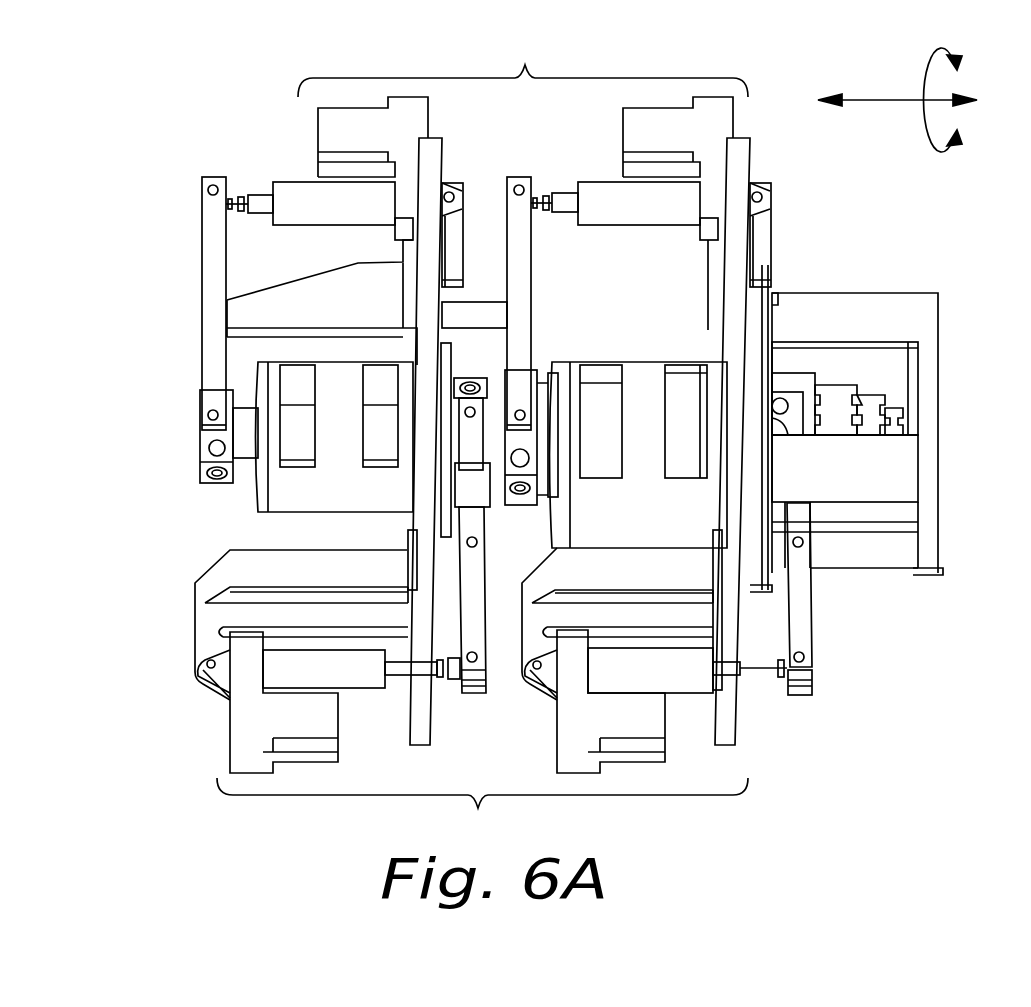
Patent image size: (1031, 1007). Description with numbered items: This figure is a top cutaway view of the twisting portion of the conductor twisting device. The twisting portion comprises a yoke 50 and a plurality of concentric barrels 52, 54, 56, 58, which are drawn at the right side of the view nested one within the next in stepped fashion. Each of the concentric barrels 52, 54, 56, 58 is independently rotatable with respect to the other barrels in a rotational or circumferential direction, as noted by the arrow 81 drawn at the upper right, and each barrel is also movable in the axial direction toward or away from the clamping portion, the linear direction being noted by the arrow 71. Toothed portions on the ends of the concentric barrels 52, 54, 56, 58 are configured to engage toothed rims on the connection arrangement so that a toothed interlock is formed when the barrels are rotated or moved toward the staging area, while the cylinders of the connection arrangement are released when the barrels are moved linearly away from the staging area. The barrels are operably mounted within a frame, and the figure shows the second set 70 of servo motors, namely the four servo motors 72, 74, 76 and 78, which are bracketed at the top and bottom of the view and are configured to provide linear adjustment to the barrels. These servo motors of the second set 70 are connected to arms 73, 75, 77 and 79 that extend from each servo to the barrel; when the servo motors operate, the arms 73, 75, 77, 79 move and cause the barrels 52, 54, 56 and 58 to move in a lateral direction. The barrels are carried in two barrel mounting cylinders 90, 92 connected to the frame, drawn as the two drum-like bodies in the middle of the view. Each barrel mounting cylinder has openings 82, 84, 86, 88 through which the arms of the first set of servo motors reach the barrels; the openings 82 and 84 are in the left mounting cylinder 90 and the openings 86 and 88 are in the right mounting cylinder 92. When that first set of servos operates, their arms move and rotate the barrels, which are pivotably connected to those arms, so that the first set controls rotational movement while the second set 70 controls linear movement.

The yoke 50 is at (933, 490).
The concentric barrel 52 is at (905, 410).
The concentric barrel 54 is at (873, 398).
The concentric barrel 56 is at (603, 486).
The concentric barrel 58 is at (795, 382).
The second set of servo motors 70 is at (482, 437).
The arrow indicating linear direction 71 is at (888, 98).
The servo motor 72 is at (330, 157).
The arm 73 is at (213, 233).
The servo motor 74 is at (318, 690).
The arm 75 is at (473, 576).
The servo motor 76 is at (635, 157).
The arm 77 is at (528, 245).
The servo motor 78 is at (658, 680).
The arm 79 is at (803, 610).
The arrow indicating rotational direction 81 is at (928, 126).
The opening 82 is at (308, 372).
The opening 84 is at (388, 372).
The opening 86 is at (588, 368).
The opening 88 is at (673, 368).
The barrel mounting cylinder 90 is at (290, 490).
The barrel mounting cylinder 92 is at (640, 530).